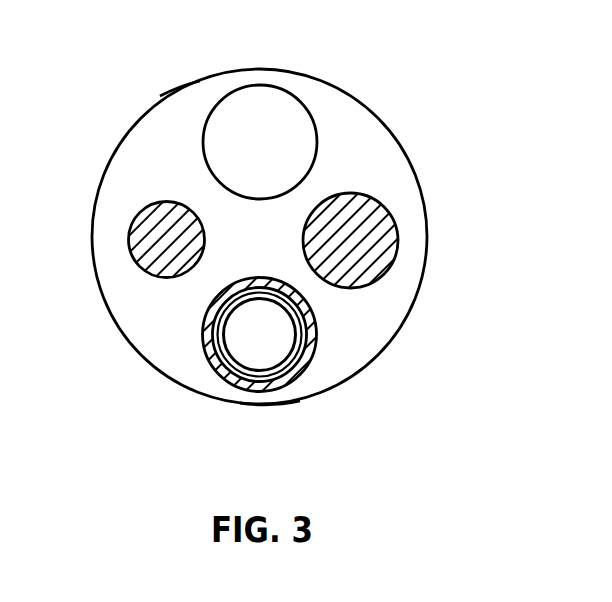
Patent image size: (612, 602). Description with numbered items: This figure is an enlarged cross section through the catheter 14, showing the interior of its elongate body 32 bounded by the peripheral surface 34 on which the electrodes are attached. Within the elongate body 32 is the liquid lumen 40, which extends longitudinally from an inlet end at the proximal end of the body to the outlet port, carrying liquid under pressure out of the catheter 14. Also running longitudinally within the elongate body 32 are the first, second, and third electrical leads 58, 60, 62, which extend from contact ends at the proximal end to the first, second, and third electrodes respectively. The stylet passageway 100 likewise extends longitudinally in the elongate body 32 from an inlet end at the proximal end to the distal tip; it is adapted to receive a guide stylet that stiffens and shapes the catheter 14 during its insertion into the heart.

The catheter 14 is at (411, 139).
The elongate body 32 is at (184, 115).
The liquid lumen 40 is at (290, 108).
The second electrical lead 60 is at (135, 233).
The third electrical lead 62 is at (385, 232).
The first electrical lead 58 is at (295, 375).
The stylet passageway 100 is at (252, 357).
The peripheral surface 34 is at (277, 407).